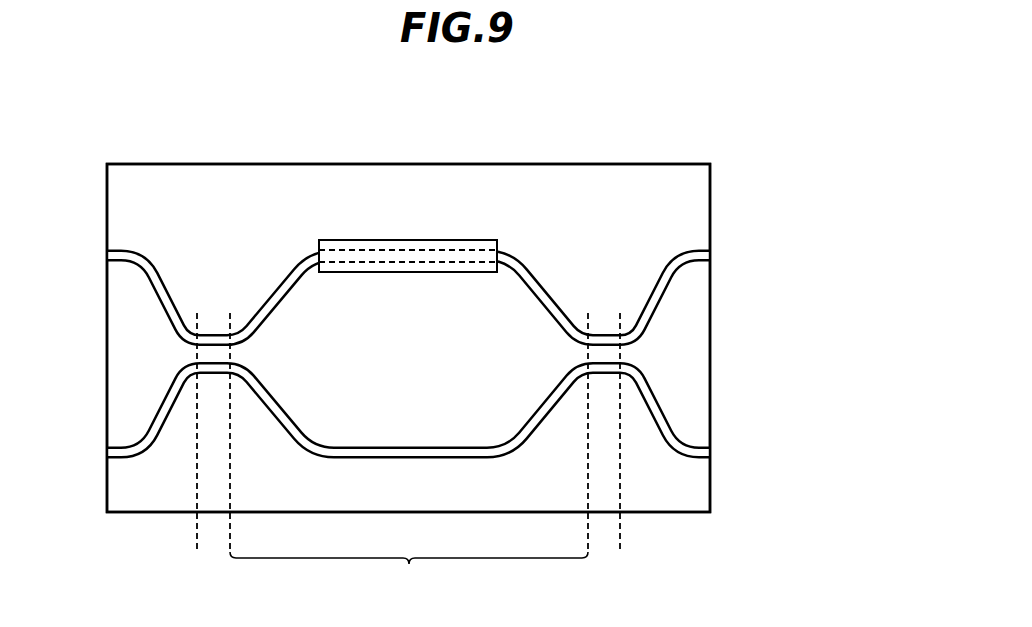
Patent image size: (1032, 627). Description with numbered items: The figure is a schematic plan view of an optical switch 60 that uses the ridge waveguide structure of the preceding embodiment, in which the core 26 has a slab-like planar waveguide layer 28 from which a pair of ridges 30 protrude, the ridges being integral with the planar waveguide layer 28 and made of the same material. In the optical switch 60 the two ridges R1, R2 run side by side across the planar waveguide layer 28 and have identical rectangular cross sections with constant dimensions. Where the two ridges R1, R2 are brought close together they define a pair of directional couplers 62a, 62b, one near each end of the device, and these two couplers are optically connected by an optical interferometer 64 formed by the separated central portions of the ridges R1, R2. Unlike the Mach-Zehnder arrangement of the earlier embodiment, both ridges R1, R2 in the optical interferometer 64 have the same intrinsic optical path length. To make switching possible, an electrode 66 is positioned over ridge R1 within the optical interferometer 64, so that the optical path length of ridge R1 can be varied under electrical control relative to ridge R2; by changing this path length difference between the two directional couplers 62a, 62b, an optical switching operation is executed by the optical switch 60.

The optical switch 60 is at (494, 333).
The planar waveguide layer 28 is at (696, 192).
The core 26 is at (494, 338).
The ridges 30 is at (467, 338).
The ridge R1 is at (707, 255).
The ridge R2 is at (441, 420).
The electrode 66 is at (408, 246).
The directional coupler 62a is at (230, 552).
The directional coupler 62b is at (620, 552).
The optical interferometer 64 is at (409, 574).